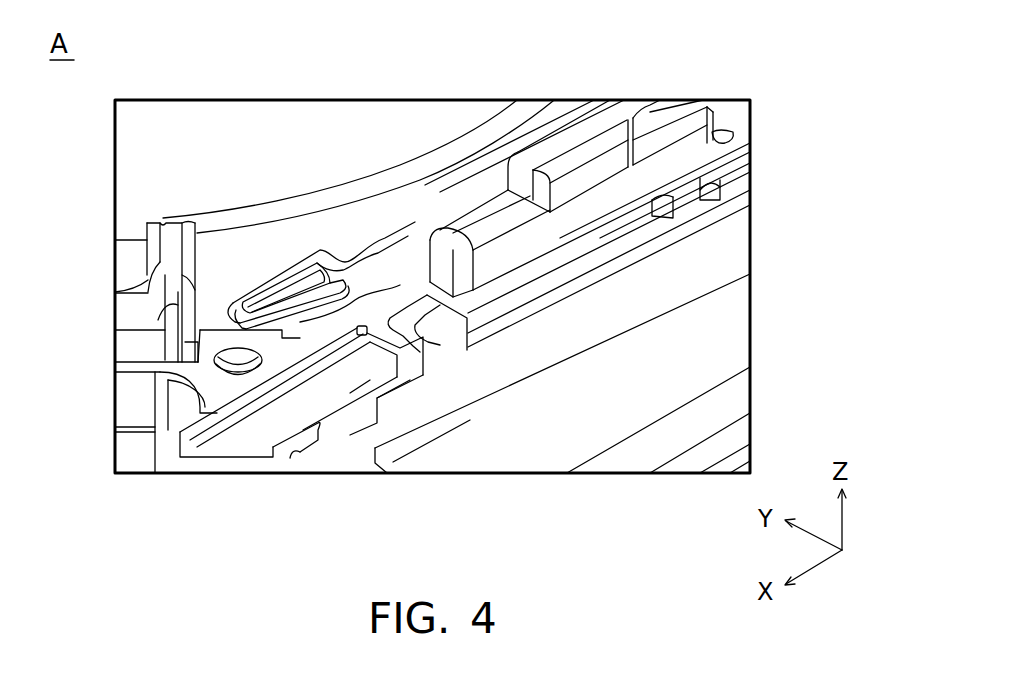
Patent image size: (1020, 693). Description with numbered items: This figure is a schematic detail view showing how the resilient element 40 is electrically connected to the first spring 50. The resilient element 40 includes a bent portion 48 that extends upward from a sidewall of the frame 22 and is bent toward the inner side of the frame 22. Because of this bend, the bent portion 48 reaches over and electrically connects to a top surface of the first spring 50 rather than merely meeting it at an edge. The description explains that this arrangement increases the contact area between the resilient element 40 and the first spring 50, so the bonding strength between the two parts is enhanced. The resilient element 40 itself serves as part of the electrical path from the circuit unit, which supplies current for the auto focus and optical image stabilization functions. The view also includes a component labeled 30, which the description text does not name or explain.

The frame 22 is at (577, 133).
The post 30 is at (172, 253).
The resilient element 40 is at (708, 237).
The bent portion 48 is at (427, 318).
The first spring 50 is at (277, 274).